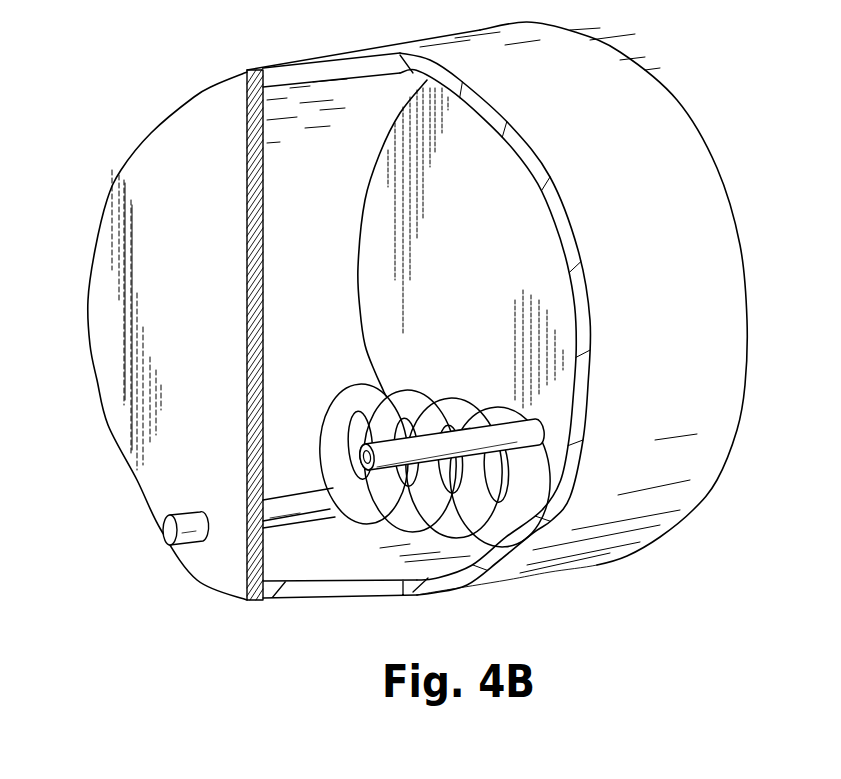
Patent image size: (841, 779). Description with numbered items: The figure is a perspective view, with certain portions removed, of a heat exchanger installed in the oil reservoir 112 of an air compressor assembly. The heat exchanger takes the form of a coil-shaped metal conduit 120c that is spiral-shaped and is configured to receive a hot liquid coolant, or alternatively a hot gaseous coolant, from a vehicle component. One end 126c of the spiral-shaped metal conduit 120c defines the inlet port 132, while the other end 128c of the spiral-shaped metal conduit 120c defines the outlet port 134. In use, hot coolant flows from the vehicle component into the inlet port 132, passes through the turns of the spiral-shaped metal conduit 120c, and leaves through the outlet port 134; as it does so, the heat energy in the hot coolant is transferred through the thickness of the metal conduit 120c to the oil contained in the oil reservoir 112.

The oil reservoir 112 is at (682, 115).
The coil-shaped metal conduit 120c is at (448, 358).
The one end of the spiral-shaped metal conduit 126c is at (292, 505).
The other end of the spiral-shaped metal conduit 128c is at (453, 438).
The outlet port 134 is at (360, 457).
The inlet port 132 is at (169, 529).